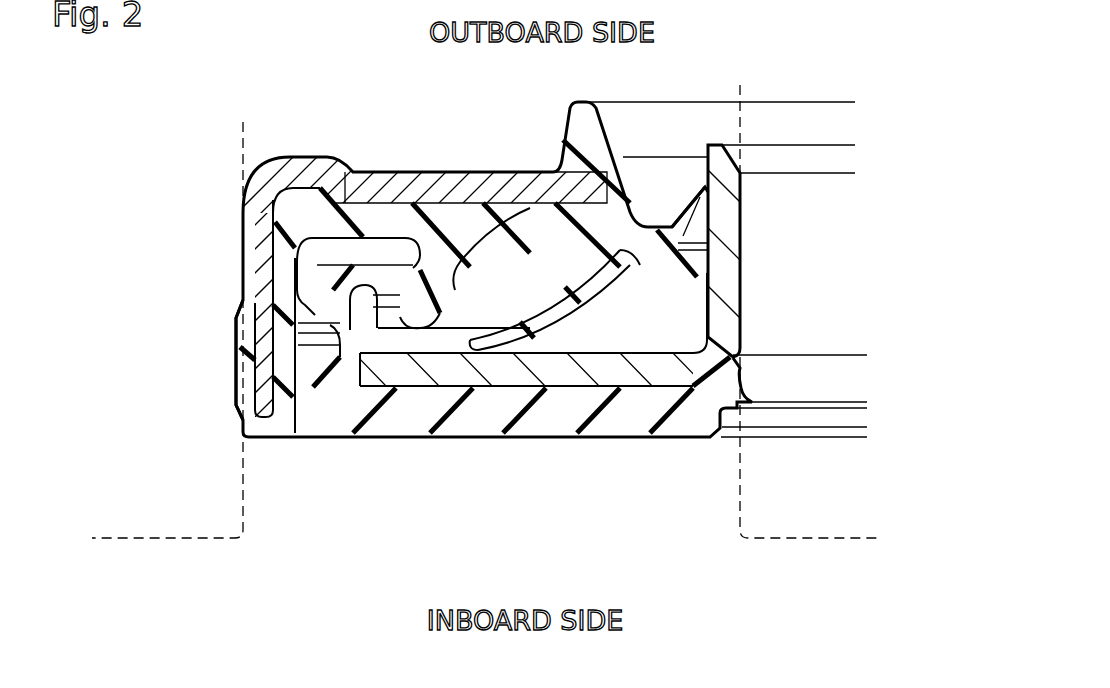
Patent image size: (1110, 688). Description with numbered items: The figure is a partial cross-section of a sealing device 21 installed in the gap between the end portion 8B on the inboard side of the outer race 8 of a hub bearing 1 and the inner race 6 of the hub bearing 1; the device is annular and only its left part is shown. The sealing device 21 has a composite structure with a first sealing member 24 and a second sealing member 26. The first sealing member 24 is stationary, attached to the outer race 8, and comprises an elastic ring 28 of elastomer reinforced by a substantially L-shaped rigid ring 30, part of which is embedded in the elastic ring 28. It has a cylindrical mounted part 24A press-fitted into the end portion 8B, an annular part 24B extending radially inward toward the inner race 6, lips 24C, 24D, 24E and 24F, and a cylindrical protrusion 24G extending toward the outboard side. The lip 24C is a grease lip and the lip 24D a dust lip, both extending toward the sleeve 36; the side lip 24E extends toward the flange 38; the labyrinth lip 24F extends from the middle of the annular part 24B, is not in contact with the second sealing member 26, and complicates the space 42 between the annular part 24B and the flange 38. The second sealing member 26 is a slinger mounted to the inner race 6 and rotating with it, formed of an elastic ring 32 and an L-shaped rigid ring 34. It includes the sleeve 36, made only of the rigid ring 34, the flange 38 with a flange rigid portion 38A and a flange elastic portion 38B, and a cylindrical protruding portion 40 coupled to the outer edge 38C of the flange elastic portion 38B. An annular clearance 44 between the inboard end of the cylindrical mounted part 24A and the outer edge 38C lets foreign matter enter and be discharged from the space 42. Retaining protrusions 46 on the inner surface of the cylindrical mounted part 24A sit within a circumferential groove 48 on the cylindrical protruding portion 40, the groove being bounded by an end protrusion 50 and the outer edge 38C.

The hub bearing 1 is at (222, 578).
The inner race 6 is at (762, 540).
The outer race 8 is at (137, 540).
The end portion 8B is at (110, 540).
The sealing device 21 is at (314, 535).
The first sealing member 24 is at (392, 132).
The cylindrical mounted part 24A is at (247, 418).
The annular part 24B is at (467, 187).
The lip 24C is at (687, 195).
The lip 24D is at (690, 252).
The side lip 24E is at (550, 297).
The labyrinth lip 24F is at (467, 297).
The cylindrical protrusion 24G is at (565, 127).
The second sealing member 26 is at (460, 500).
The elastic ring 28 is at (290, 215).
The rigid ring 30 is at (322, 170).
The elastic ring 32 is at (607, 430).
The rigid ring 34 is at (730, 300).
The sleeve 36 is at (730, 273).
The flange 38 is at (556, 430).
The flange rigid portion 38A is at (512, 388).
The flange elastic portion 38B is at (393, 423).
The outer edge 38C is at (330, 423).
The cylindrical protruding portion 40 is at (447, 318).
The space 42 is at (443, 343).
The annular clearance 44 is at (303, 422).
The retaining protrusions 46 is at (303, 297).
The circumferential groove 48 is at (258, 345).
The end protrusion 50 is at (318, 272).